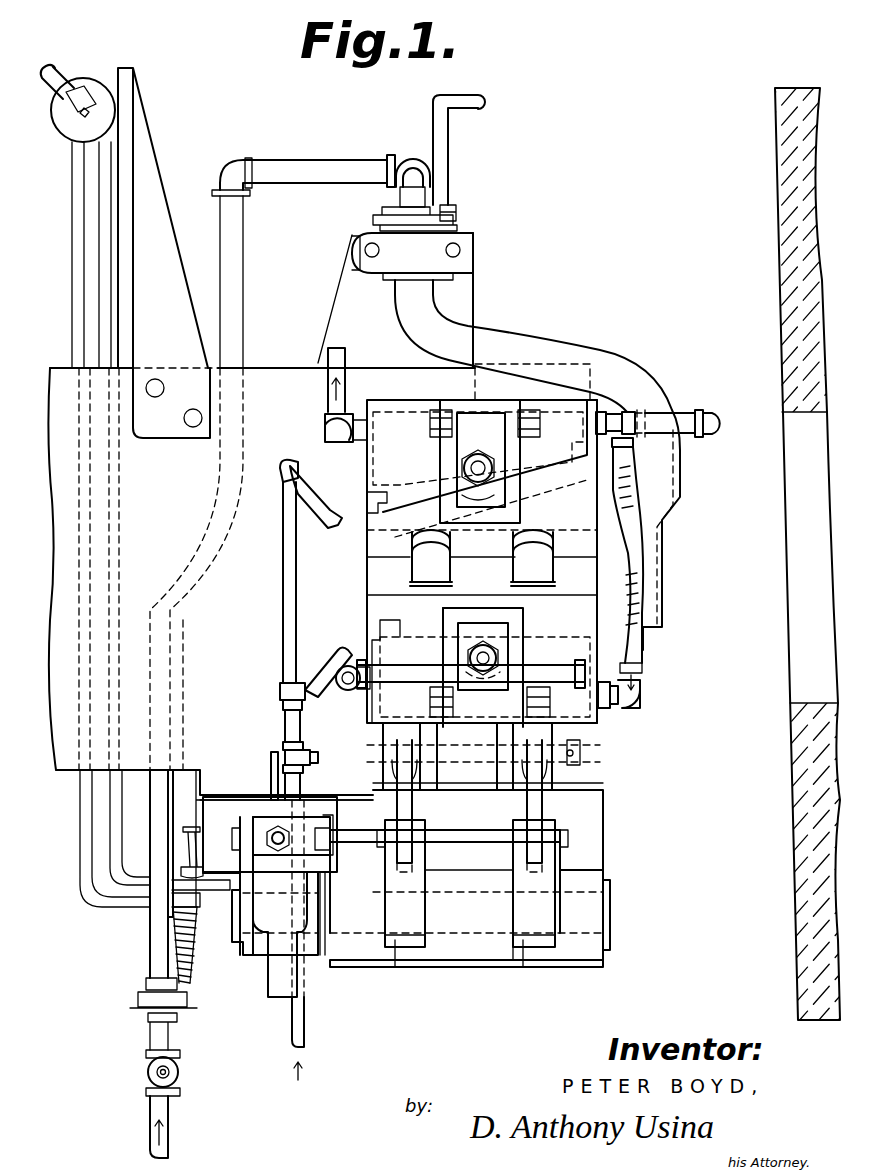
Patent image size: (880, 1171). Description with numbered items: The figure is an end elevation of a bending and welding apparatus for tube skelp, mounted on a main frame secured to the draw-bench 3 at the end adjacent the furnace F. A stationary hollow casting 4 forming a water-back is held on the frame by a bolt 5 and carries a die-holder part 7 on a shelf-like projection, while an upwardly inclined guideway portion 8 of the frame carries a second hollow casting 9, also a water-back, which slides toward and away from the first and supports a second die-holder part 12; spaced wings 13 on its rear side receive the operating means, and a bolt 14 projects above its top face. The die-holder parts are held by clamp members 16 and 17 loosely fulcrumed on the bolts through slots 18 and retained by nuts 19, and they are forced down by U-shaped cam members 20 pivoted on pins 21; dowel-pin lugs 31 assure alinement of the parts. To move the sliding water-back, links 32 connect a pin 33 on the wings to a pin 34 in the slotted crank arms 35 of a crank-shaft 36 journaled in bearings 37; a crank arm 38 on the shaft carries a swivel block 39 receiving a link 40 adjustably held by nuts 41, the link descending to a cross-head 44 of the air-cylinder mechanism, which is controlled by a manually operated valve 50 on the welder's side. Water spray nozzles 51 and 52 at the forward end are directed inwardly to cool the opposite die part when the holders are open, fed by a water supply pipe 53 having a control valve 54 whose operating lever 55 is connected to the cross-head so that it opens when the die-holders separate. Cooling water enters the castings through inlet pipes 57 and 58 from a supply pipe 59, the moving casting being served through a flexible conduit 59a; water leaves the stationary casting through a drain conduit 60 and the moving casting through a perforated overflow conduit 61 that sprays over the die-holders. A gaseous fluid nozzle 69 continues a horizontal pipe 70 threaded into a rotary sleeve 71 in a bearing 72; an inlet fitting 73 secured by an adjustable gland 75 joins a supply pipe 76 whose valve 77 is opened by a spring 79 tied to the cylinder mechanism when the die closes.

The furnace F is at (792, 190).
The draw-bench 3 is at (319, 582).
The hollow casting 4 is at (390, 420).
The bolt 5 is at (470, 468).
The die-holder part 7 is at (378, 545).
The guideway portion 8 is at (602, 800).
The second hollow casting 9 is at (481, 671).
The second die-holder part 12 is at (380, 597).
The wings 13 is at (380, 780).
The bolt 14 is at (498, 644).
The clamp member 16 is at (478, 410).
The clamp member 17 is at (482, 701).
The slot 18 is at (462, 497).
The nut 19 is at (486, 463).
The U-shaped cam member 20 is at (513, 410).
The pin 21 is at (425, 425).
The dowel-pin lug 31 is at (440, 568).
The link 32 is at (525, 803).
The pin 33 is at (582, 750).
The pin 34 is at (455, 850).
The crank arm 35 is at (400, 920).
The crank-shaft 36 is at (463, 920).
The bearing 37 is at (590, 900).
The crank arm 38 is at (245, 820).
The swivel block 39 is at (258, 850).
The link 40 is at (292, 843).
The nut 41 is at (286, 832).
The cross-head 44 is at (215, 800).
The manually operated valve 50 is at (90, 100).
The water spray nozzle 51 is at (315, 493).
The water spray nozzle 52 is at (328, 653).
The water supply pipe 53 is at (288, 720).
The control valve 54 is at (288, 752).
The operating lever 55 is at (272, 776).
The water inlet pipe 57 is at (603, 420).
The water inlet pipe 58 is at (625, 700).
The water supply pipe 59 is at (688, 418).
The flexible conduit 59a is at (640, 643).
The drain conduit 60 is at (330, 393).
The overflow conduit 61 is at (395, 680).
The nozzle 69 is at (660, 578).
The pipe 70 is at (455, 328).
The rotary sleeve 71 is at (458, 212).
The bearing 72 is at (478, 242).
The inlet fitting 73 is at (410, 203).
The adjustable gland 75 is at (385, 205).
The gaseous fluid supply pipe 76 is at (244, 302).
The valve 77 is at (170, 1072).
The spring 79 is at (182, 940).